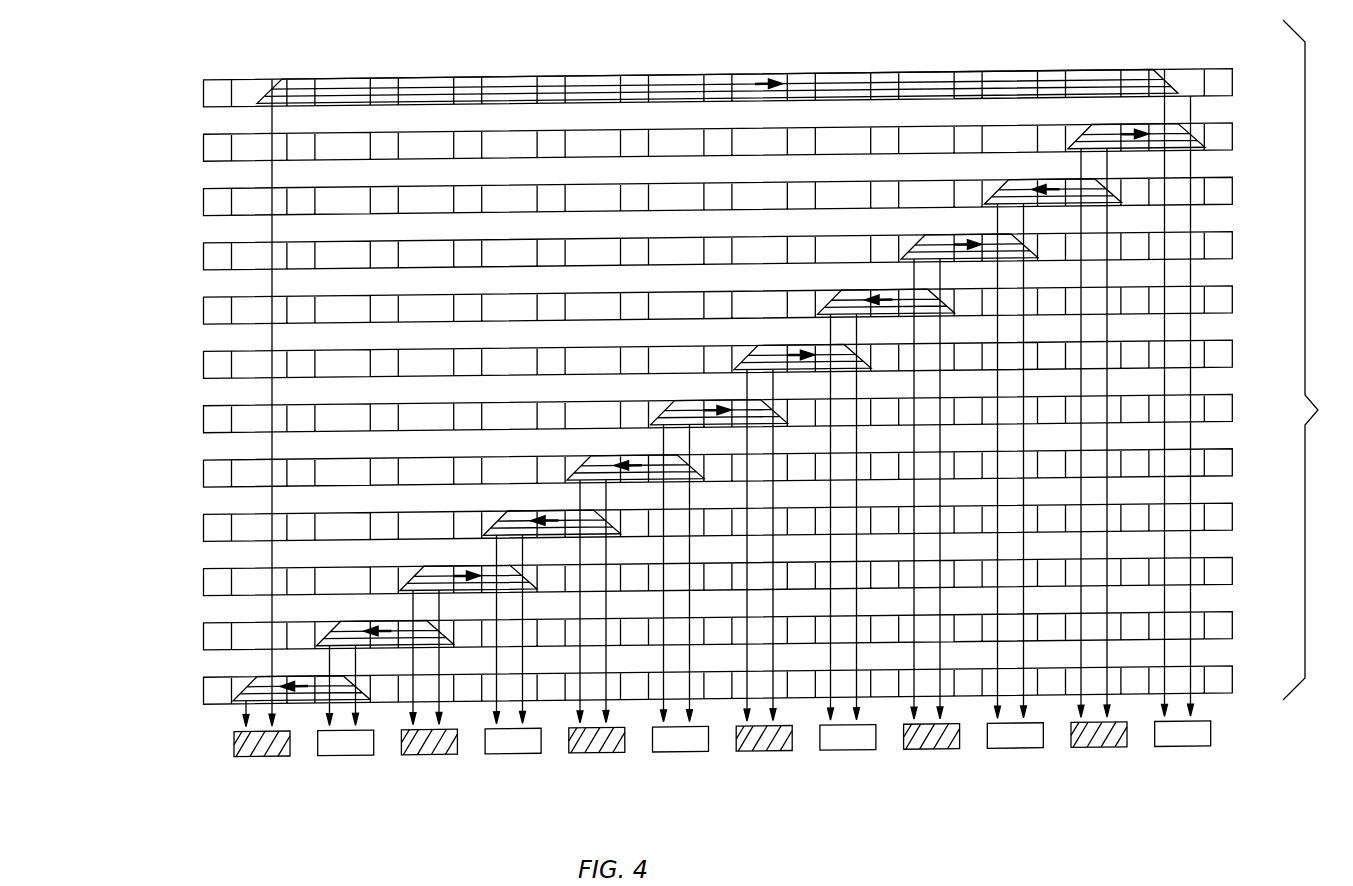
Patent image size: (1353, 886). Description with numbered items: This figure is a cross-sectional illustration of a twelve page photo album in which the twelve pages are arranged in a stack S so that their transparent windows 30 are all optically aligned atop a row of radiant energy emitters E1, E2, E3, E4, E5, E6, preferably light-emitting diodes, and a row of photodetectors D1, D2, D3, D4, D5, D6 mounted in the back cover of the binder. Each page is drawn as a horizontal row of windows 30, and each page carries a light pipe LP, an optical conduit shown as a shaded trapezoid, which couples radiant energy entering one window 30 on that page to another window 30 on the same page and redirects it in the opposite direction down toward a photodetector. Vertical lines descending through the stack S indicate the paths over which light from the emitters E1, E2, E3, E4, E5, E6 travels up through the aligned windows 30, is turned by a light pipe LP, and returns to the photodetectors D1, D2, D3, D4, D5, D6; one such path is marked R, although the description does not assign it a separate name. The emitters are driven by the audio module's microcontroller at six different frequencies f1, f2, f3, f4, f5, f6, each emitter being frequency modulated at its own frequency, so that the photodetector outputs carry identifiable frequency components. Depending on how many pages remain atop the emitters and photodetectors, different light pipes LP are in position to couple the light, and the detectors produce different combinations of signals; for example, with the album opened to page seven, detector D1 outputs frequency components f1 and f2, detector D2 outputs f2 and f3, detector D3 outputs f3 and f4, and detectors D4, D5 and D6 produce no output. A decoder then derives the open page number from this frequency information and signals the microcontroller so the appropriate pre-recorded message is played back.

The transparent windows 30 is at (1172, 32).
The light pipe LP is at (516, 82).
The reference line R is at (275, 390).
The stack S is at (1311, 360).
The radiant energy emitter E1 is at (262, 746).
The photodetector D1 is at (346, 718).
The radiant energy emitter E2 is at (429, 690).
The photodetector D2 is at (513, 662).
The radiant energy emitter E3 is at (597, 634).
The photodetector D3 is at (681, 606).
The radiant energy emitter E4 is at (764, 578).
The photodetector D4 is at (848, 550).
The radiant energy emitter E5 is at (932, 522).
The photodetector D5 is at (1015, 493).
The radiant energy emitter E6 is at (1099, 465).
The photodetector D6 is at (1183, 426).
The frequency f1 is at (249, 804).
The frequency f2 is at (416, 802).
The frequency f3 is at (584, 801).
The frequency f4 is at (751, 799).
The frequency f5 is at (918, 797).
The frequency f6 is at (1086, 795).